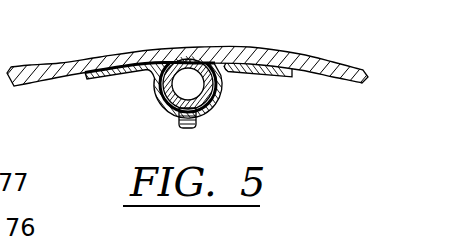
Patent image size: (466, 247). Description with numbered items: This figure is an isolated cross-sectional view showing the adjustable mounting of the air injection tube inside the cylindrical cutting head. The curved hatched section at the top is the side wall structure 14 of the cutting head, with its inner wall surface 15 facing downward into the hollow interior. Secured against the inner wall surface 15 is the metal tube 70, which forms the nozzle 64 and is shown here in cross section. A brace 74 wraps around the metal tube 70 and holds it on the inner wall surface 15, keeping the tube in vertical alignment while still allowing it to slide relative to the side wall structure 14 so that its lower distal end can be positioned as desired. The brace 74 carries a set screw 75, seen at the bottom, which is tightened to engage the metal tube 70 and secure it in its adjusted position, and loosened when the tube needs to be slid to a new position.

The side wall structure 14 is at (337, 61).
The inner wall surface 15 is at (305, 74).
The nozzle 64 is at (199, 84).
The metal tube 70 is at (218, 70).
The brace 74 is at (215, 103).
The set screw 75 is at (186, 128).